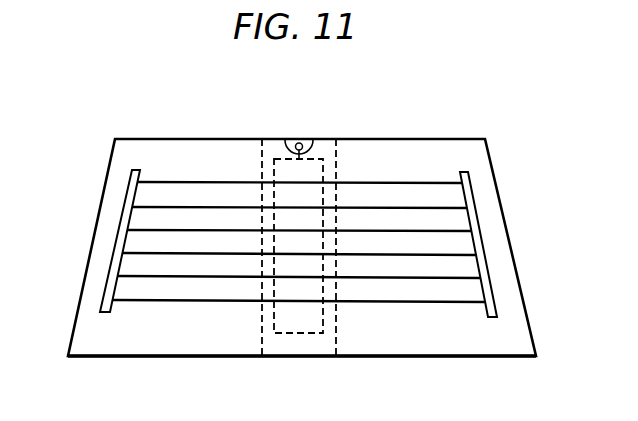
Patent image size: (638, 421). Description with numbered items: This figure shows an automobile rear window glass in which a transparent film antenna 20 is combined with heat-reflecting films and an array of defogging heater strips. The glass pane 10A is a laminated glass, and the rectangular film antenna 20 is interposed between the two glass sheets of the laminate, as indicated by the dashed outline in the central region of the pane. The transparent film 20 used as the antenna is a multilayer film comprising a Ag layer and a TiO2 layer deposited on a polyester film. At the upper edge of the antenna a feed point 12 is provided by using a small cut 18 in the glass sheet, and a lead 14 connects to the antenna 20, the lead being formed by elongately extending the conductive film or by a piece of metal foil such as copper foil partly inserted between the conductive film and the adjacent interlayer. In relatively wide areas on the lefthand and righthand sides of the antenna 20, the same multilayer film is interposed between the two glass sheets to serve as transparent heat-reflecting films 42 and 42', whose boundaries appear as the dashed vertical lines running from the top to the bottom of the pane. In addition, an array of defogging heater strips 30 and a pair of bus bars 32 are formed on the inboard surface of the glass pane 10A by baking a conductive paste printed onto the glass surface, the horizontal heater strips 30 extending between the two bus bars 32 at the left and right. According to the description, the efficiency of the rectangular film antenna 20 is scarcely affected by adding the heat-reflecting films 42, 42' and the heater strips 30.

The glass pane 10A is at (490, 167).
The feed point 12 is at (297, 144).
The lead 14 is at (311, 150).
The small cut 18 is at (289, 151).
The transparent film antenna 20 is at (310, 175).
The defogging heater strips 30 is at (410, 279).
The bus bars 32 is at (118, 242).
The heat-reflecting film 42 is at (234, 271).
The heat-reflecting film 42' is at (365, 271).